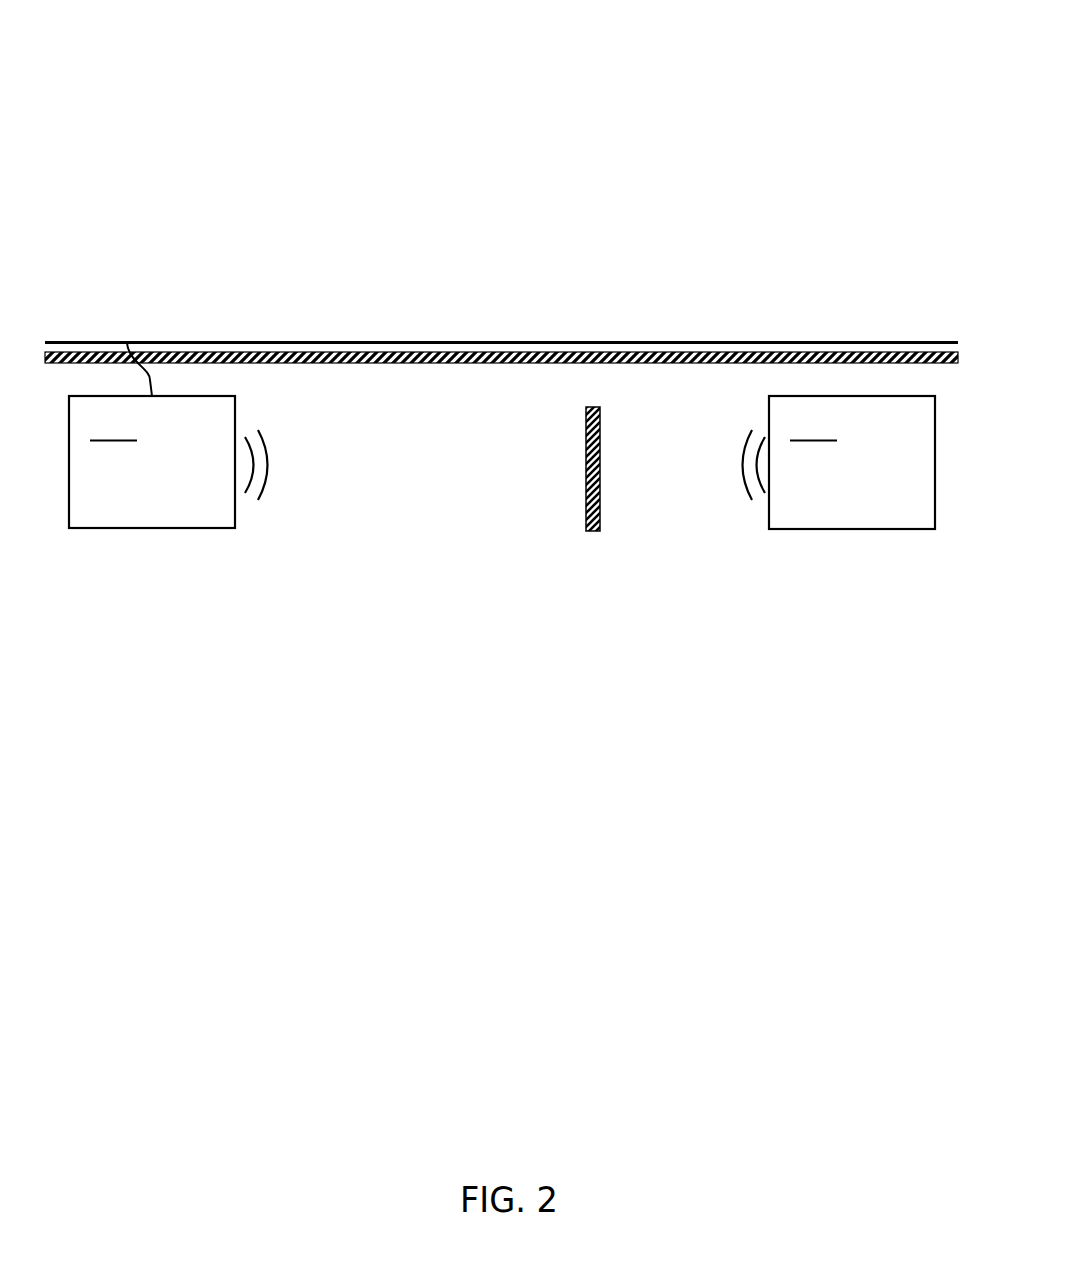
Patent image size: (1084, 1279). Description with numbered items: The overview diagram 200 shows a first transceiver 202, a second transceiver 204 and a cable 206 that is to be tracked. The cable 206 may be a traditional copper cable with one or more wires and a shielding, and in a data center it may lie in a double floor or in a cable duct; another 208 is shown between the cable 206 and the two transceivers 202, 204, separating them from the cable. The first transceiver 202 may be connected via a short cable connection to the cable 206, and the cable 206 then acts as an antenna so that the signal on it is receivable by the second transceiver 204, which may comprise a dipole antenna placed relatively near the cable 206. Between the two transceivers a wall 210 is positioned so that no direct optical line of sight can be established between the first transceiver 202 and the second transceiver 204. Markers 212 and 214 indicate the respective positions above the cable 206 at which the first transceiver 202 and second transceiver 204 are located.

The overview diagram 200 is at (684, 112).
The first transceiver 202 is at (168, 435).
The second transceiver 204 is at (839, 462).
The cable 206 is at (566, 328).
The another (intermediate layer) 208 is at (479, 381).
The wall 210 is at (592, 546).
The first position 212 is at (127, 313).
The second position 214 is at (852, 314).